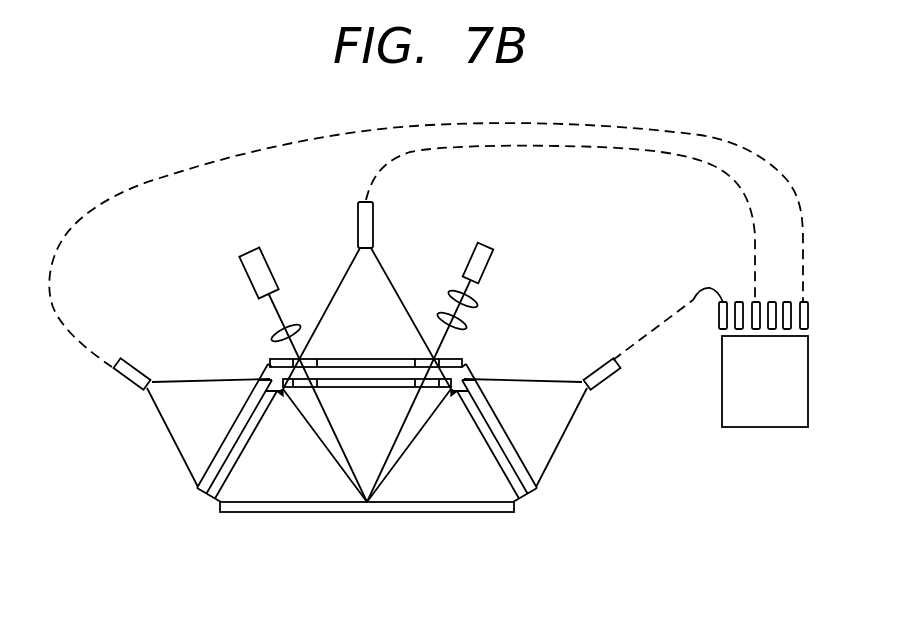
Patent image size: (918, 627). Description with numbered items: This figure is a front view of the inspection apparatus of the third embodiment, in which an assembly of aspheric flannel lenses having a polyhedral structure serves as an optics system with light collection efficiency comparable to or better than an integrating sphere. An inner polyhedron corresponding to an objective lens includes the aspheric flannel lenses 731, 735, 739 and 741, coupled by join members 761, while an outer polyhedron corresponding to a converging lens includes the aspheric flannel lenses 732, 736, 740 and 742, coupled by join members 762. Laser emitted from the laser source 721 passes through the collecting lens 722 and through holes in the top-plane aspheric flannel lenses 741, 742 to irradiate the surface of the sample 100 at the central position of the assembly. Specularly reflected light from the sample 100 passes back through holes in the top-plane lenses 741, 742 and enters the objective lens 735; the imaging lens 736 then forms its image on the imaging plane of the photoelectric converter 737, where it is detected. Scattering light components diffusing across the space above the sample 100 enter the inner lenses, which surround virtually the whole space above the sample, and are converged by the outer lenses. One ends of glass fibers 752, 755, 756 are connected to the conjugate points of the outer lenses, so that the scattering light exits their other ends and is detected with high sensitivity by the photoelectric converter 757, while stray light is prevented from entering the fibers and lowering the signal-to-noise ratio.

The sample 100 is at (281, 512).
The laser source 721 is at (257, 280).
The collecting lens 722 is at (280, 333).
The aspheric flannel lens 731 is at (507, 472).
The aspheric flannel lens 732 is at (515, 442).
The objective lens 735 is at (466, 322).
The imaging lens 736 is at (475, 300).
The photoelectric converter 737 is at (488, 265).
The aspheric flannel lens 739 is at (228, 468).
The aspheric flannel lens 740 is at (224, 438).
The top-plane aspheric flannel lens 741 is at (364, 358).
The top-plane aspheric flannel lens 742 is at (342, 387).
The glass fiber 752 is at (612, 360).
The glass fiber 755 is at (129, 362).
The glass fiber 756 is at (373, 225).
The photoelectric converter 757 is at (768, 420).
The join members 761 is at (462, 392).
The join members 762 is at (273, 365).